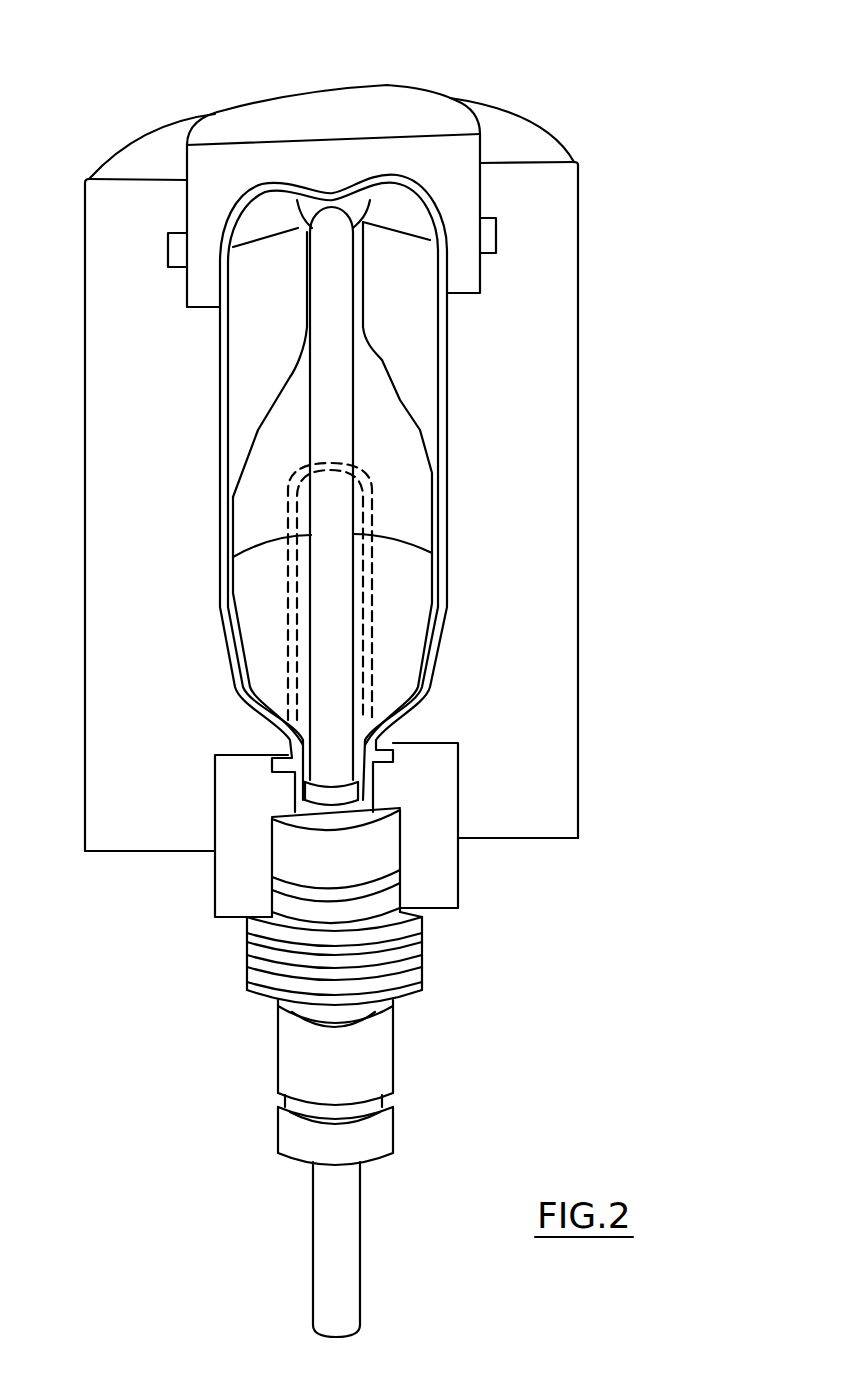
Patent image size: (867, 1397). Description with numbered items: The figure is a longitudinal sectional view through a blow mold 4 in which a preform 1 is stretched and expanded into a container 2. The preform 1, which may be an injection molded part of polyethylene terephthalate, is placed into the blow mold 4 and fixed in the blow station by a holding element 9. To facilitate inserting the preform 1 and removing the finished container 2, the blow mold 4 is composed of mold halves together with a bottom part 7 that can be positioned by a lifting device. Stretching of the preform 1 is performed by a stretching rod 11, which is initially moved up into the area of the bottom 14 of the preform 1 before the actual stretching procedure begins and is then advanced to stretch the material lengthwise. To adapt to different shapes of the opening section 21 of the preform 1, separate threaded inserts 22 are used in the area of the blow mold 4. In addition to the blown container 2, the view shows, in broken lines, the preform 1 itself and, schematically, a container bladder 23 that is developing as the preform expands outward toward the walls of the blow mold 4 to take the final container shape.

The preform 1 is at (373, 630).
The container 2 is at (445, 400).
The blow mold 4 is at (535, 470).
The bottom part 7 is at (418, 100).
The holding element 9 is at (410, 978).
The stretching rod 11 is at (313, 1265).
The bottom of the preform 14 is at (367, 468).
The opening section 21 is at (380, 777).
The threaded inserts 22 is at (442, 867).
The container bladder 23 is at (382, 360).